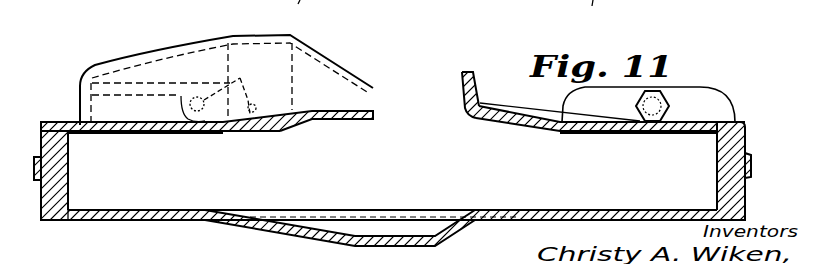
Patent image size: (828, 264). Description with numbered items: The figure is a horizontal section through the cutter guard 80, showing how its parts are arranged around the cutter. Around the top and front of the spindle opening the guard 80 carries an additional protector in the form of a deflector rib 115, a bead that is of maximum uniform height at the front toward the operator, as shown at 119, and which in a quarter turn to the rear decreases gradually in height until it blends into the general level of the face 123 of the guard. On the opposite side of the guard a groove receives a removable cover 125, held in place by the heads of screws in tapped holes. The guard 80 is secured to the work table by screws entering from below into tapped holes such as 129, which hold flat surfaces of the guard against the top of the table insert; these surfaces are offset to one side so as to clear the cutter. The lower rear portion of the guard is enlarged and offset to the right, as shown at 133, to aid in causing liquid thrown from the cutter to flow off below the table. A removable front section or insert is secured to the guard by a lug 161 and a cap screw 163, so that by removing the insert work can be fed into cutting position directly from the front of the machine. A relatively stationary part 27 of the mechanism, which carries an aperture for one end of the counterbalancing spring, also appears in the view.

The relatively stationary part 27 is at (448, 13).
The guard 80 is at (746, 133).
The deflector rib 115 is at (474, 93).
The maximum-height portion of the deflector rib 119 is at (465, 71).
The face of the guard 123 is at (650, 130).
The removable cover 125 is at (163, 238).
The tapped hole 129 is at (228, 91).
The enlarged lower rear portion 133 is at (135, 22).
The lug 161 is at (721, 108).
The cap screw 163 is at (663, 100).